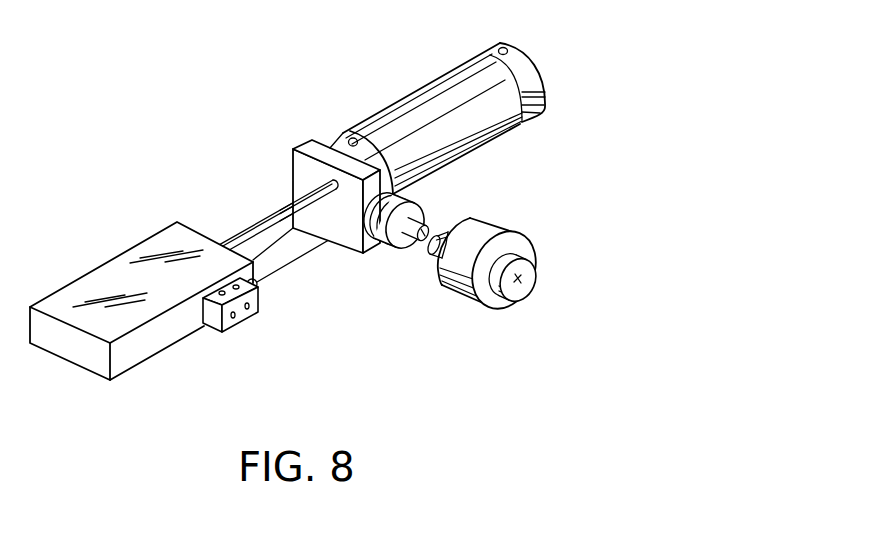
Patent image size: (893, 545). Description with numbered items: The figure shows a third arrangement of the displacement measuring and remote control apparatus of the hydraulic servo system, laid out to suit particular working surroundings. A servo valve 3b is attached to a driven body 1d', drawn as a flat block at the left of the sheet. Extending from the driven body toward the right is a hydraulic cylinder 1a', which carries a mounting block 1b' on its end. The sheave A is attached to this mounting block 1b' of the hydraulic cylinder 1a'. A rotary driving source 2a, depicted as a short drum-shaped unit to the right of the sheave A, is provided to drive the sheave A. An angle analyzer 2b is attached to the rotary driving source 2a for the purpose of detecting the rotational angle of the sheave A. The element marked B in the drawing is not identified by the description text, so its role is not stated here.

The hydraulic cylinder 1a' is at (437, 117).
The mounting block 1b' is at (330, 169).
The driven body 1d' is at (141, 322).
The rotary driving source 2a is at (495, 307).
The angle analyzer 2b is at (535, 292).
The servo valve 3b is at (237, 330).
The sheave A is at (393, 240).
The screw shaft B is at (308, 253).